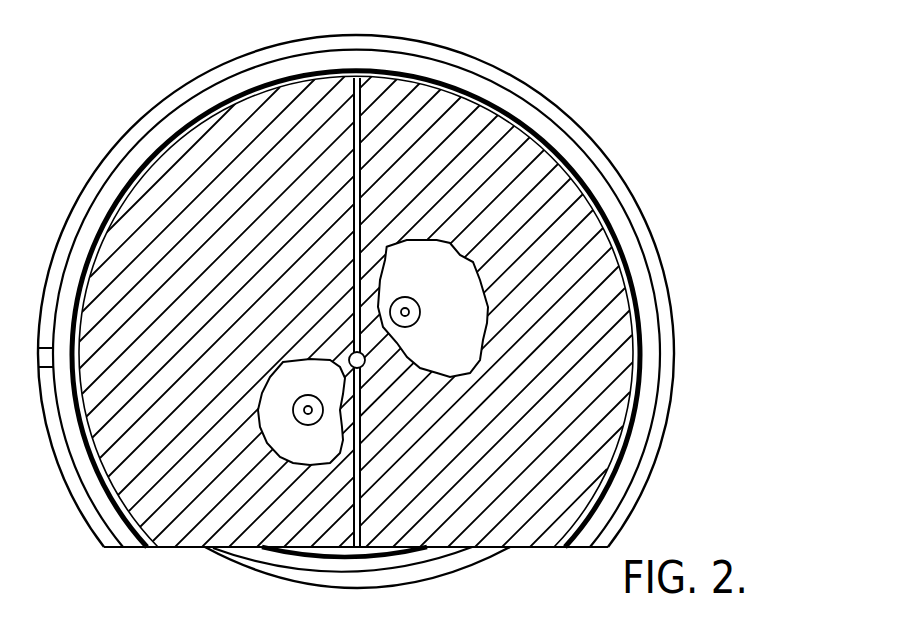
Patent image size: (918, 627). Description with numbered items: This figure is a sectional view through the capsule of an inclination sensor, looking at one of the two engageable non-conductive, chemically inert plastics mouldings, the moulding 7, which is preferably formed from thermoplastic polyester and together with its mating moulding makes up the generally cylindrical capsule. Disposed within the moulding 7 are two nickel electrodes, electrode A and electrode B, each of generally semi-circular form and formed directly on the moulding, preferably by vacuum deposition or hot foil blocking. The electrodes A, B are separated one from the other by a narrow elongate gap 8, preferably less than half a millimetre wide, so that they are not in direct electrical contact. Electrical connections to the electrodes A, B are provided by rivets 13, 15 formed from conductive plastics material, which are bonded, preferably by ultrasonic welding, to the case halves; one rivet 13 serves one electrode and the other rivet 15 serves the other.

The plastics moulding 7 is at (543, 106).
The elongate gap 8 is at (383, 88).
The rivet 13 is at (294, 414).
The rivet 15 is at (410, 302).
The electrode A is at (148, 192).
The electrode B is at (535, 170).